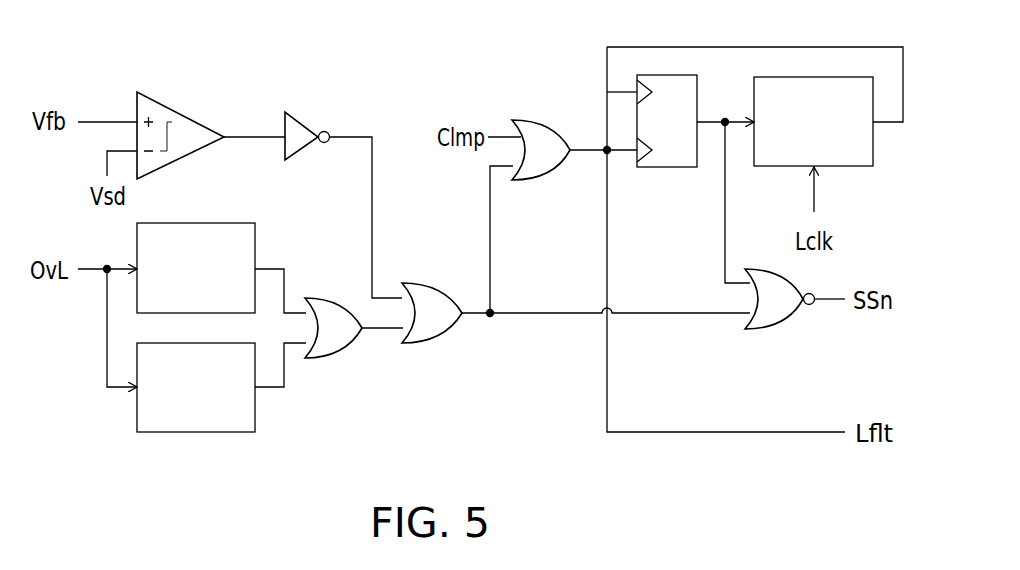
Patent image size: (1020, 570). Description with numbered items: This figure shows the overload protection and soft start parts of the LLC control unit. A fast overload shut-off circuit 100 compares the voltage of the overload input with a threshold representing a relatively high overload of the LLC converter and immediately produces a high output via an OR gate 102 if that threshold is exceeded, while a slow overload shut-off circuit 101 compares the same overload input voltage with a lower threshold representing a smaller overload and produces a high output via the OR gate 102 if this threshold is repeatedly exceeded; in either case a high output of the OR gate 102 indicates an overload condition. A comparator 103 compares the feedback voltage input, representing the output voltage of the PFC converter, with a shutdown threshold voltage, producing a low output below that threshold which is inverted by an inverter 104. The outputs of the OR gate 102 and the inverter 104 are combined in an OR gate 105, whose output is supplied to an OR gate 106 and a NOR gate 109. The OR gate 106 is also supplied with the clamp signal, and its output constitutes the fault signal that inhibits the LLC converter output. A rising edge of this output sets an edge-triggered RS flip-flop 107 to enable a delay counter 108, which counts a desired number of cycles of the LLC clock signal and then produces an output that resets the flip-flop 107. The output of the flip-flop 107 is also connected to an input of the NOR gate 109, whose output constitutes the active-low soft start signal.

The fast overload shut-off circuit 100 is at (247, 233).
The slow overload shut-off circuit 101 is at (247, 418).
The OR gate 102 is at (348, 343).
The comparator 103 is at (190, 128).
The inverter 104 is at (293, 125).
The OR gate 105 is at (437, 328).
The OR gate 106 is at (530, 125).
The edge-triggered RS flip-flop 107 is at (683, 158).
The delay counter 108 is at (780, 155).
The NOR gate 109 is at (765, 318).